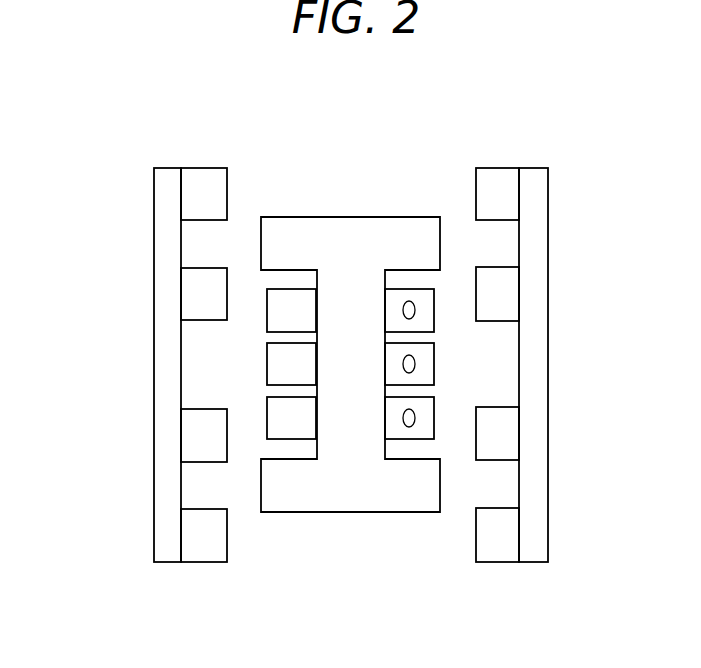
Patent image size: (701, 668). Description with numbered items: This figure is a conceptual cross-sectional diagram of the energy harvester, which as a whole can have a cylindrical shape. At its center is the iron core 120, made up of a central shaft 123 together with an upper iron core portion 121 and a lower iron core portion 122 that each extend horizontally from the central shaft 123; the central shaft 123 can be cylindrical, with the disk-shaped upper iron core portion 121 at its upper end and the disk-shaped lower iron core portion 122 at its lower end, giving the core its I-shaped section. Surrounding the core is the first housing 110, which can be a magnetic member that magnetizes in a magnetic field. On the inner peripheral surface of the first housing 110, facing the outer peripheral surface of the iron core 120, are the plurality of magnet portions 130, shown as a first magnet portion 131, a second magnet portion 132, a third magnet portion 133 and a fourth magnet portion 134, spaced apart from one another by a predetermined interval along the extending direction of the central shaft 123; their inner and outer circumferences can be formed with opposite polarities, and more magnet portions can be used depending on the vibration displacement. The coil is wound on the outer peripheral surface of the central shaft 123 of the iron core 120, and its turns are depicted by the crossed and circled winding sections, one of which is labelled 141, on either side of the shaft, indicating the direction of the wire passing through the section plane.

The first housing 110 is at (167, 180).
The iron core 120 is at (444, 384).
The upper iron core portion 121 is at (360, 232).
The lower iron core portion 122 is at (374, 498).
The central shaft 123 is at (357, 378).
The plurality of magnet portions 130 is at (74, 258).
The first magnet portion 131 is at (203, 193).
The second magnet portion 132 is at (200, 295).
The third magnet portion 133 is at (202, 437).
The fourth magnet portion 134 is at (203, 541).
The winding 141 is at (423, 310).